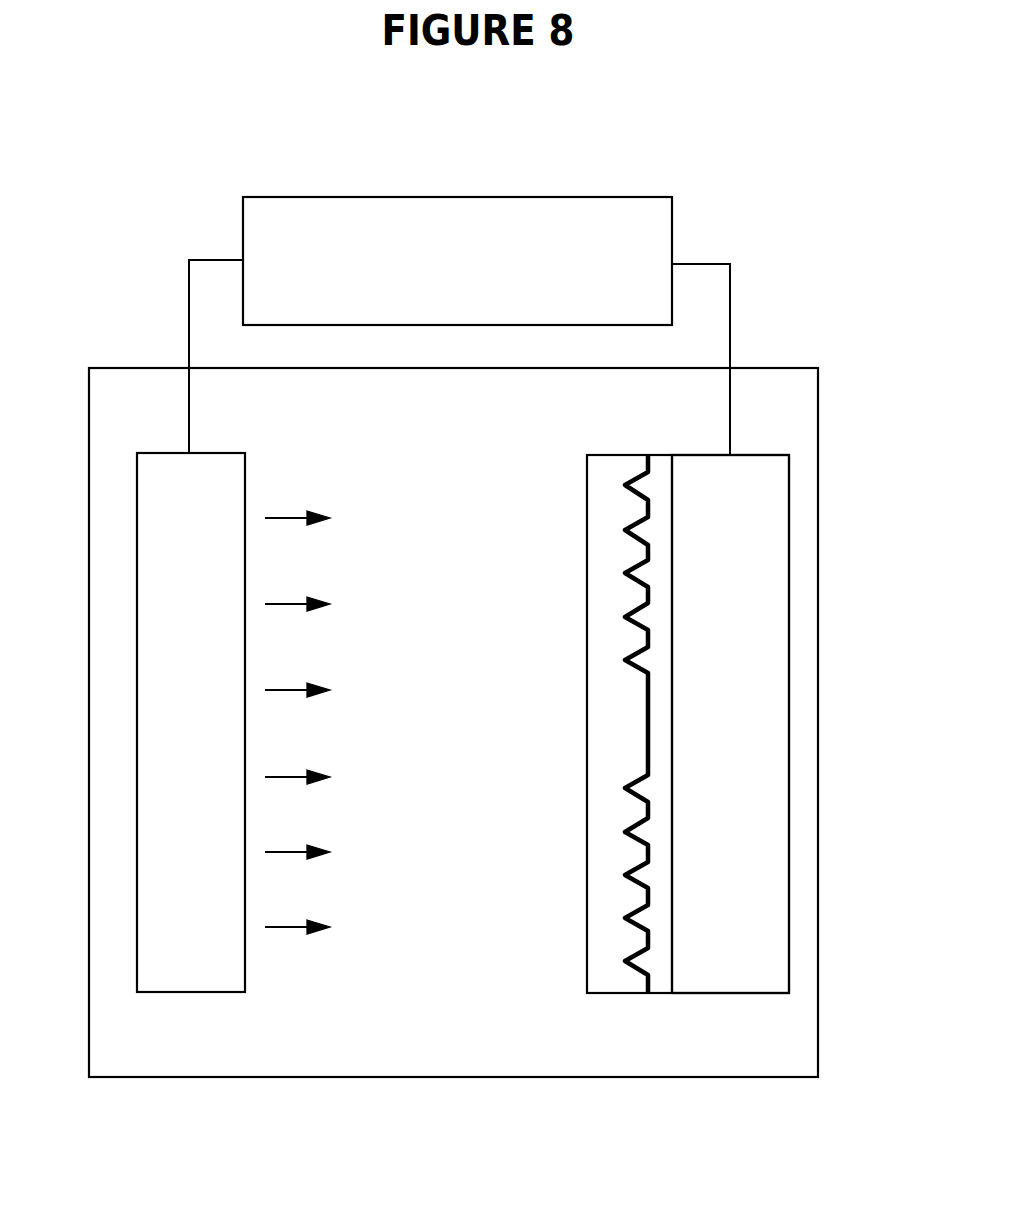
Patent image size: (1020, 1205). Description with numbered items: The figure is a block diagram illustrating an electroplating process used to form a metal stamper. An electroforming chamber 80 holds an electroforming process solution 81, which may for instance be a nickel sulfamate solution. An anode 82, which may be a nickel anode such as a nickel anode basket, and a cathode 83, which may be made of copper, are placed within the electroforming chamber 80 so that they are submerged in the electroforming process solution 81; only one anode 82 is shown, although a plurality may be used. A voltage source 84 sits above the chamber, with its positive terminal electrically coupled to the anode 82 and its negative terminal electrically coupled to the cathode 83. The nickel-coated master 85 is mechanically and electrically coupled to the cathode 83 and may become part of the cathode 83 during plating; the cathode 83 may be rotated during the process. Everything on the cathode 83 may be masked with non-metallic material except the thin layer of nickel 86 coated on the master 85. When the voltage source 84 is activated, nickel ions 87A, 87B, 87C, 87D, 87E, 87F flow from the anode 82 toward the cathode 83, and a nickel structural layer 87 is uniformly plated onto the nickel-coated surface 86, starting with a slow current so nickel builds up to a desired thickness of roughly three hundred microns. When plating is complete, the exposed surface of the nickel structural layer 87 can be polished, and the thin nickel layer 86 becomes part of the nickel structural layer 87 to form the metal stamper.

The electroforming chamber 80 is at (780, 368).
The electroforming process solution 81 is at (527, 1037).
The anode 82 is at (178, 777).
The cathode 83 is at (719, 779).
The voltage source 84 is at (450, 289).
The nickel-coated master 85 is at (659, 455).
The thin layer of nickel coated on the master 86 is at (648, 455).
The nickel structural layer 87 is at (587, 497).
The nickel ions 87A is at (297, 529).
The nickel ions 87B is at (297, 614).
The nickel ions 87C is at (297, 700).
The nickel ions 87D is at (297, 788).
The nickel ions 87E is at (297, 863).
The nickel ions 87F is at (297, 938).